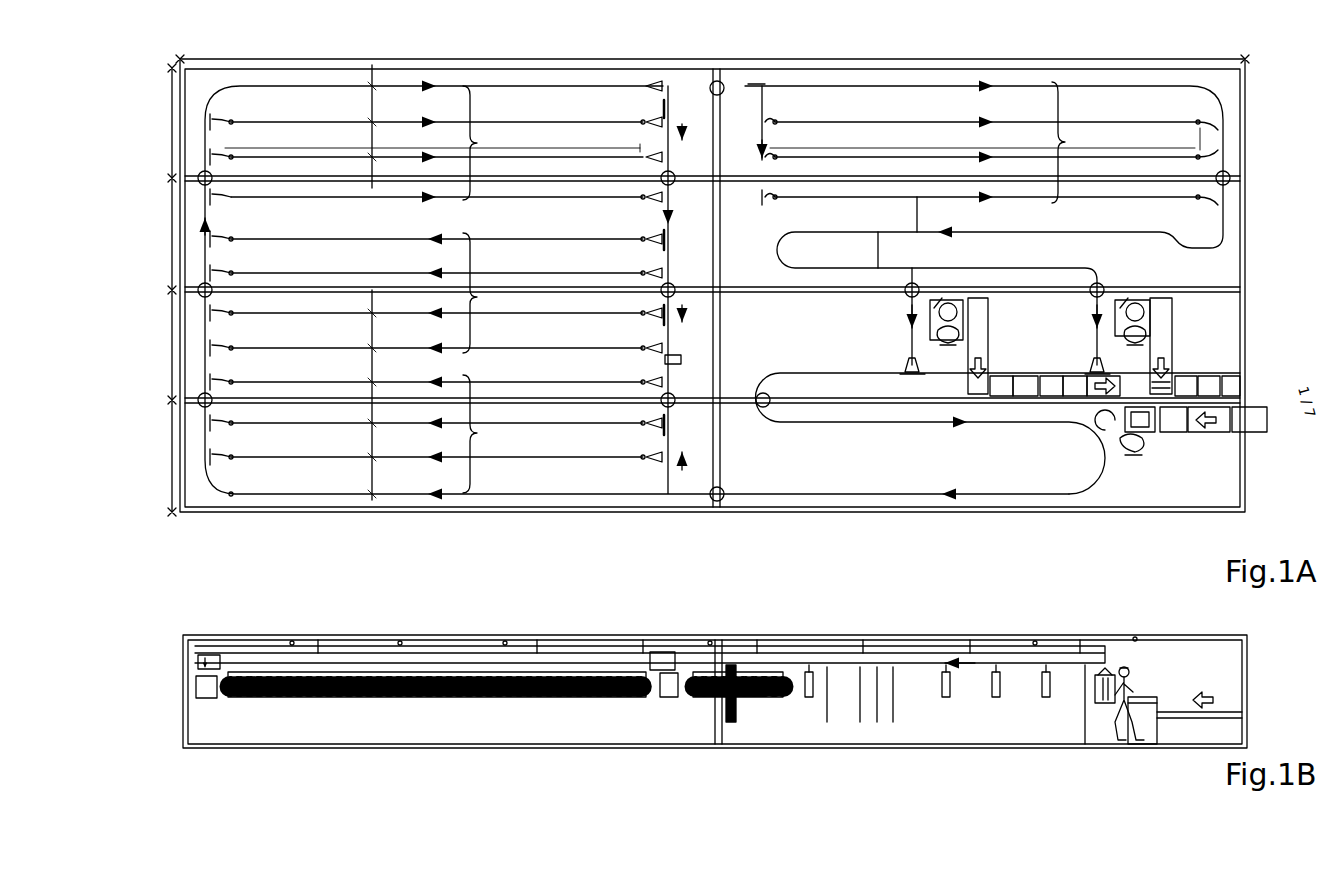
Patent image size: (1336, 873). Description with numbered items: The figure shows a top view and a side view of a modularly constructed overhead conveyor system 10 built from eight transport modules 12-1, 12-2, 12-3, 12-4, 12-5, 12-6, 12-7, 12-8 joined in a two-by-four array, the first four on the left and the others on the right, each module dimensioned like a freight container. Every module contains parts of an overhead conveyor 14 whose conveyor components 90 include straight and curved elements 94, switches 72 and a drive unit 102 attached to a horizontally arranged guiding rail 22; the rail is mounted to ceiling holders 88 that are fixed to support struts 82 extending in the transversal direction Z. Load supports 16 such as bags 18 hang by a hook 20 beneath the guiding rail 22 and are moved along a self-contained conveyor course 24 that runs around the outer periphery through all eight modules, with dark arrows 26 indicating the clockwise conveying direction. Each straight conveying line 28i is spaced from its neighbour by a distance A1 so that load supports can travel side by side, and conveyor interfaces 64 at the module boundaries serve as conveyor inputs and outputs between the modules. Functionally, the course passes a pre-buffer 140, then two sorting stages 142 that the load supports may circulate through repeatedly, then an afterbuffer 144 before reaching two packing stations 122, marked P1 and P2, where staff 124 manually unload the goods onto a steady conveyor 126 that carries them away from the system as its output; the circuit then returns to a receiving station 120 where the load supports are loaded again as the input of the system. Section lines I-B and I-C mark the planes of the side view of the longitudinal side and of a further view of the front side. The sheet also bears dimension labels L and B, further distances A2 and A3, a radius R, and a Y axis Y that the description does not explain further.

In FIG. 1A, the conveyor system 10 is at (485, 48).
In FIG. 1A, the transport module 12-1 is at (318, 513).
In FIG. 1B, the transport module 12-1 is at (487, 748).
In FIG. 1A, the transport module 12-2 is at (172, 314).
In FIG. 1A, the transport module 12-3 is at (172, 203).
In FIG. 1A, the transport module 12-4 is at (172, 94).
In FIG. 1A, the transport module 12-5 is at (1245, 93).
In FIG. 1A, the transport module 12-6 is at (1245, 226).
In FIG. 1A, the transport module 12-7 is at (1245, 320).
In FIG. 1A, the transport module 12-8 is at (1160, 513).
In FIG. 1B, the transport module 12-8 is at (757, 748).
In FIG. 1A, the overhead conveyor 14 is at (843, 503).
In FIG. 1B, the load support 16 is at (950, 706).
In FIG. 1B, the bag 18 is at (805, 700).
In FIG. 1B, the hook 20 is at (668, 668).
In FIG. 1B, the guiding rail 22 is at (572, 645).
In FIG. 1A, the conveyor course 24 is at (803, 80).
In FIG. 1A, the arrows 26 is at (432, 241).
In FIG. 1B, the arrows 26 is at (958, 670).
In FIG. 1A, the conveying line 28i is at (857, 122).
In FIG. 1A, the conveyor interface 64 is at (212, 178).
In FIG. 1A, the switch 72 is at (1240, 131).
In FIG. 1A, the conveyor component 90 is at (640, 198).
In FIG. 1A, the curved element 94 is at (762, 262).
In FIG. 1A, the drive unit 102 is at (681, 362).
In FIG. 1A, the receiving station 120 is at (1165, 447).
In FIG. 1B, the receiving station 120 is at (1168, 705).
In FIG. 1A, the packing station 122 is at (990, 312).
In FIG. 1A, the staff 124 is at (950, 345).
In FIG. 1A, the steady conveyor 126 is at (988, 346).
In FIG. 1A, the pre-buffer 140 is at (514, 447).
In FIG. 1A, the sorting stage 142 is at (511, 152).
In FIG. 1A, the afterbuffer 144 is at (1077, 142).
In FIG. 1B, the support strut 82 is at (205, 645).
In FIG. 1B, the ceiling holder 88 is at (205, 656).
In FIG. 1A, the length of installation L is at (342, 58).
In FIG. 1A, the width of section B is at (172, 142).
In FIG. 1A, the distance A1 is at (372, 330).
In FIG. 1A, the second distance A2 is at (372, 308).
In FIG. 1A, the third distance A3 is at (680, 208).
In FIG. 1A, the radius R is at (775, 243).
In FIG. 1A, the first packing station P1 is at (949, 333).
In FIG. 1A, the second packing station P2 is at (1136, 333).
In FIG. 1A, the section line I-B is at (330, 463).
In FIG. 1A, the section line I-C is at (1035, 192).
In FIG. 1A, the transversal direction Z is at (170, 530).
In FIG. 1B, the Y axis Y is at (172, 772).